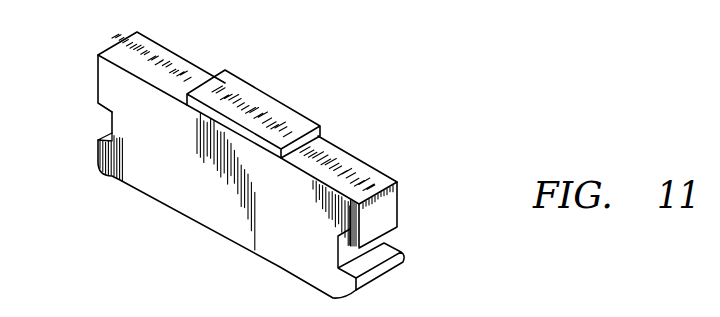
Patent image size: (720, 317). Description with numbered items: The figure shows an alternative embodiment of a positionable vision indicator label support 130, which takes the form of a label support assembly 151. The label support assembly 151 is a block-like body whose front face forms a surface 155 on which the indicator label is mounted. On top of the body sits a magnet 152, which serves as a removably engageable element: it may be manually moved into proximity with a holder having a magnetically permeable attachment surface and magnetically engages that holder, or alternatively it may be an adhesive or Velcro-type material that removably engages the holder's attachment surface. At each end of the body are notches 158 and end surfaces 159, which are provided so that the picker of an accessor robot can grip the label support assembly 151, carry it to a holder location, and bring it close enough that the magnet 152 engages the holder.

The positionable vision indicator label support 130 is at (254, 163).
The label support assembly 151 is at (337, 147).
The magnet 152 is at (238, 76).
The surface 155 is at (148, 195).
The notches 158 is at (110, 118).
The surfaces 159 is at (97, 76).